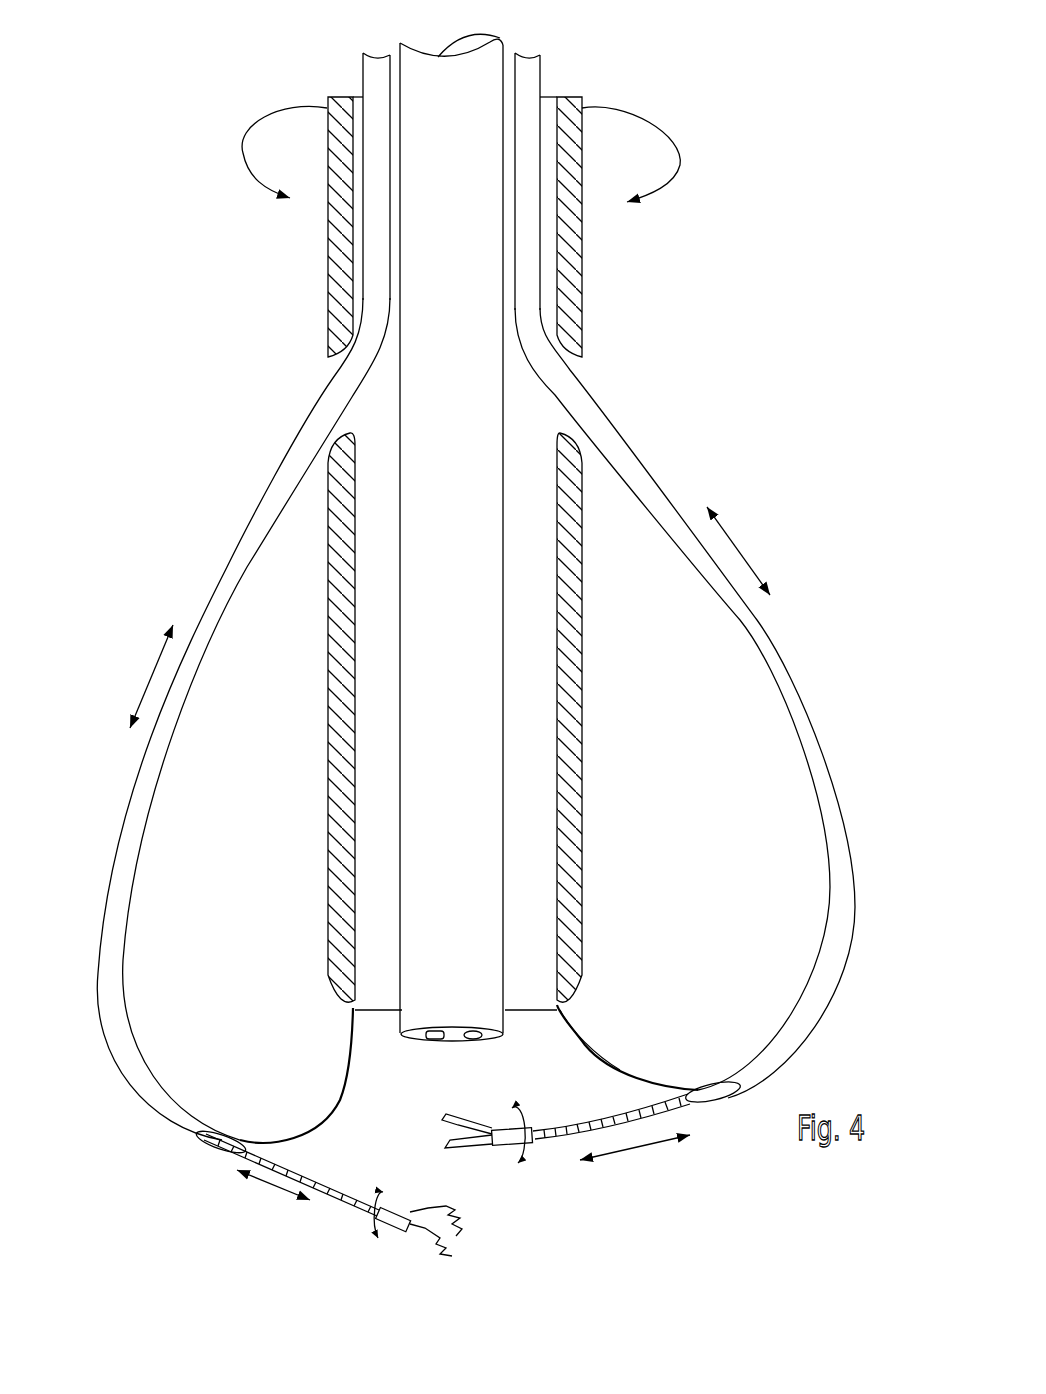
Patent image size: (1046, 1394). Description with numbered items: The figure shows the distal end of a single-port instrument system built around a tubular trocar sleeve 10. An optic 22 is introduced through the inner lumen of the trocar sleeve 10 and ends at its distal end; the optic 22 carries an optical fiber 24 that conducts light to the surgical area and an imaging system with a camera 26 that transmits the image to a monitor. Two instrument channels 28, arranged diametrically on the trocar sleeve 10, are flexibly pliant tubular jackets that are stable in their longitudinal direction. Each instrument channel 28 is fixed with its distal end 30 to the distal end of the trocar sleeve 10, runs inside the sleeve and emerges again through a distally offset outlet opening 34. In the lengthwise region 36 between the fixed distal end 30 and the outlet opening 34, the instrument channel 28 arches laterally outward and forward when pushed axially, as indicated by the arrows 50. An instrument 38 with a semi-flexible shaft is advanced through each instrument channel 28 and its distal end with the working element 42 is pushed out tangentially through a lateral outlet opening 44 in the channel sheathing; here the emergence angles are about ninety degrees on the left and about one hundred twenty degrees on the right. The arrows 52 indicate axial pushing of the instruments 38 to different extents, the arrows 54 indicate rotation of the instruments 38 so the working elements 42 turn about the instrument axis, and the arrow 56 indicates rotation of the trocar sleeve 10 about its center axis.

The trocar sleeve 10 is at (567, 495).
The optic 22 is at (463, 290).
The optical fiber 24 is at (470, 1040).
The camera 26 is at (433, 1042).
The instrument channel 28 is at (525, 72).
The distal end 30 is at (350, 1008).
The outlet opening 34 is at (690, 342).
The lengthwise region 36 is at (808, 615).
The instrument 38 is at (602, 1207).
The working element 42 is at (463, 1150).
The lateral outlet opening 44 is at (763, 1183).
The arrows 50 is at (817, 523).
The arrows 52 is at (693, 1203).
The arrows 54 is at (585, 1262).
The arrow 56 is at (670, 142).